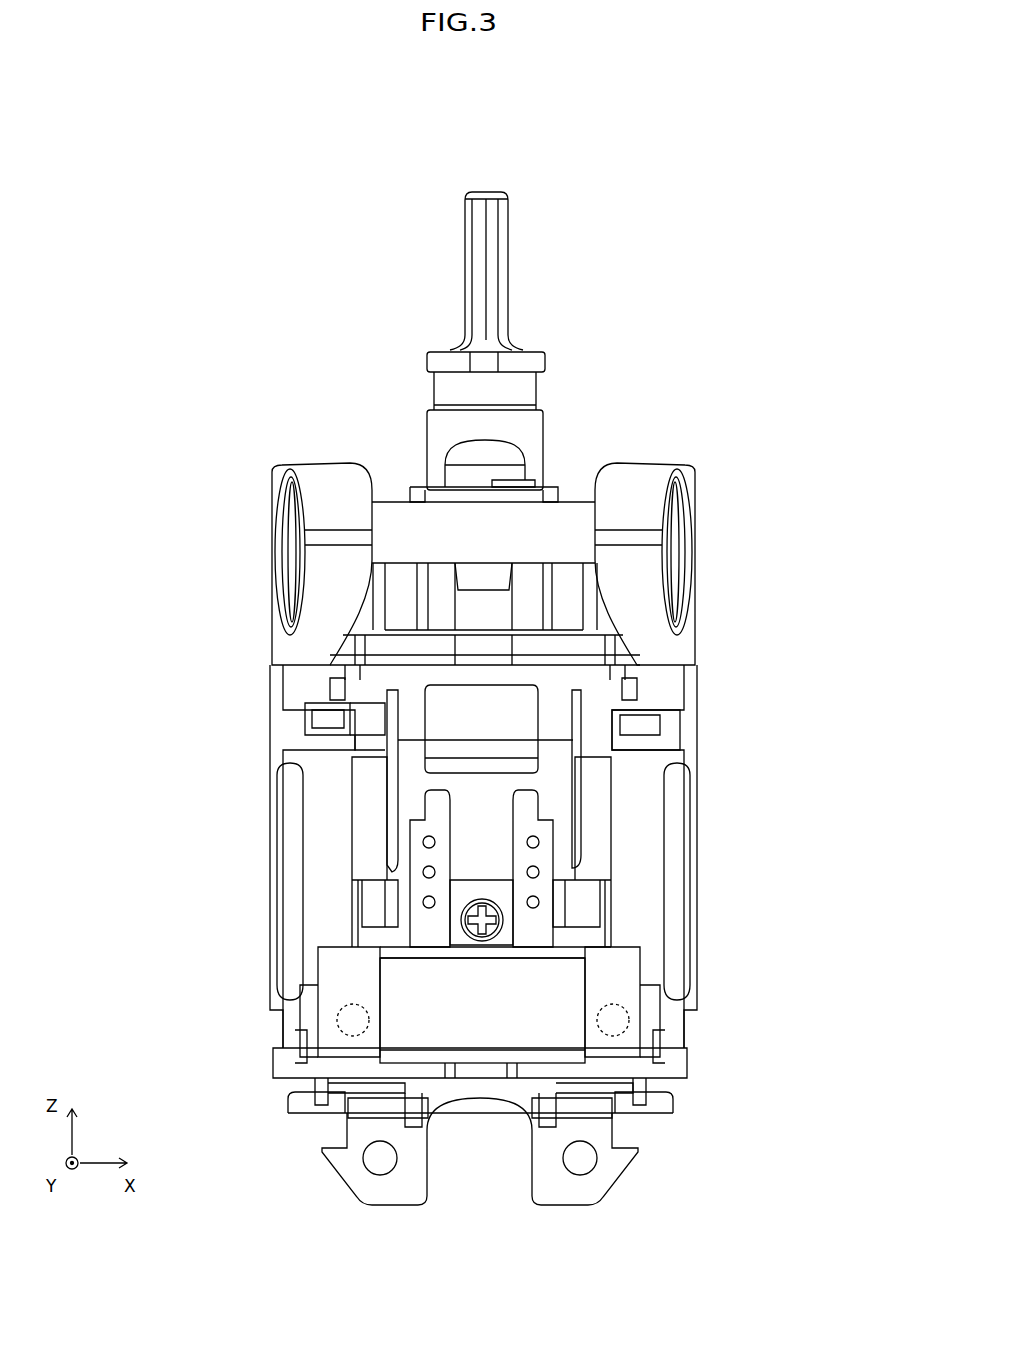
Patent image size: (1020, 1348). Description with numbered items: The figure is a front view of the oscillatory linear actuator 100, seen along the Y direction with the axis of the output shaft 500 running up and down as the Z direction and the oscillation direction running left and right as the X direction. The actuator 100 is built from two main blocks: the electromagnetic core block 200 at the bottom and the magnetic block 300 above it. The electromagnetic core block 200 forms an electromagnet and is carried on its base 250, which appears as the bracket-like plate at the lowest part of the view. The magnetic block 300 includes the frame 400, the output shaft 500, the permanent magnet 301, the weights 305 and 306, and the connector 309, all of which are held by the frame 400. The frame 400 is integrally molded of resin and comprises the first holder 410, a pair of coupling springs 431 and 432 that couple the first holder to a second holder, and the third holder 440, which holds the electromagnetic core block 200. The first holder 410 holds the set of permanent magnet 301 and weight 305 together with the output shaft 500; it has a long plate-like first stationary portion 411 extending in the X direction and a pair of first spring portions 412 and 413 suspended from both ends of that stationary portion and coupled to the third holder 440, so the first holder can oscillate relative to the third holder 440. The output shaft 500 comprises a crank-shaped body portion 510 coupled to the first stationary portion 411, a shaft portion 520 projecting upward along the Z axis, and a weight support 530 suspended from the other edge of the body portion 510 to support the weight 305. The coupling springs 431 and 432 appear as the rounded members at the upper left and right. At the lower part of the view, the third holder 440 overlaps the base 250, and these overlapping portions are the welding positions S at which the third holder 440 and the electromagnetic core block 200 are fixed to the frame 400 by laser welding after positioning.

The oscillatory linear actuator 100 is at (256, 156).
The electromagnetic core block 200 is at (661, 1222).
The base 250 is at (655, 1103).
The magnetic block 300 is at (301, 357).
The permanent magnet 301 is at (380, 716).
The weight 305 is at (412, 985).
The weight 306 is at (470, 500).
The connector 309 is at (440, 600).
The frame 400 is at (810, 602).
The first holder 410 is at (236, 941).
The first stationary portion 411 is at (650, 696).
The first spring portion 412 is at (280, 855).
The first spring portion 413 is at (690, 880).
The coupling spring 431 is at (325, 485).
The coupling spring 432 is at (632, 500).
The third holder 440 is at (350, 963).
The output shaft 500 is at (358, 779).
The body portion 510 is at (400, 641).
The shaft portion 520 is at (484, 240).
The weight support 530 is at (400, 794).
The welding position S is at (355, 1022).